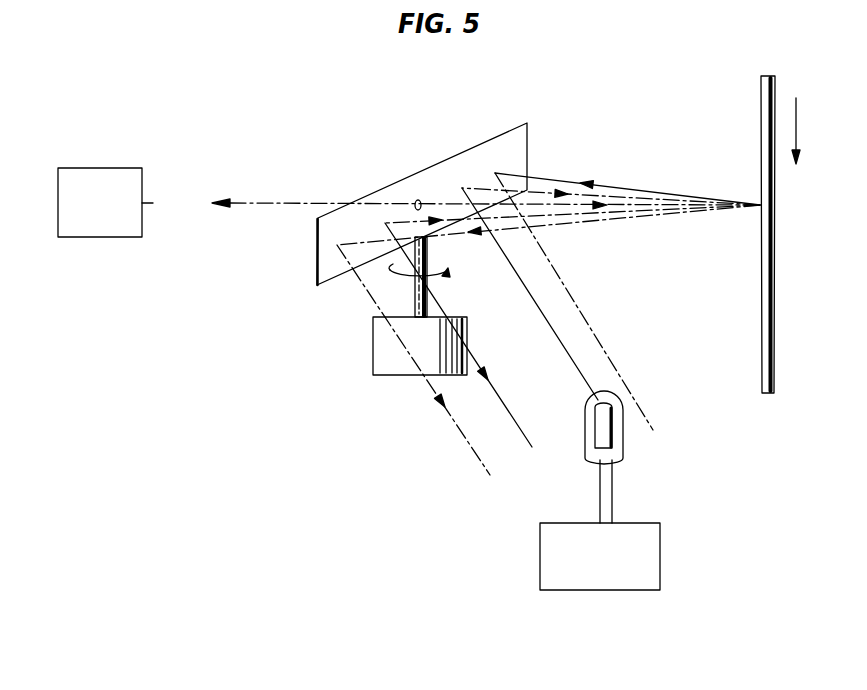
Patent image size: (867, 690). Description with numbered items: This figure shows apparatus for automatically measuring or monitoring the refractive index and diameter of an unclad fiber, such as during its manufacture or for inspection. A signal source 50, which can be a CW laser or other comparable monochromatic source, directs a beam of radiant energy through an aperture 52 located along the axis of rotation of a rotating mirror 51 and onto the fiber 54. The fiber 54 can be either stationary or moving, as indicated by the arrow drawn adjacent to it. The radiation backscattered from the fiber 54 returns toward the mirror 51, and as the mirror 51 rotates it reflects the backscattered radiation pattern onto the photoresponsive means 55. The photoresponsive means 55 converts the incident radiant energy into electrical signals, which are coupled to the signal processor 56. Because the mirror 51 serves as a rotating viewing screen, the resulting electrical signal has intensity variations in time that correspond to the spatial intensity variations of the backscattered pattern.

The signal source 50 is at (113, 168).
The rotating mirror 51 is at (468, 167).
The aperture 52 is at (412, 204).
The fiber 54 is at (765, 108).
The photoresponsive means 55 is at (623, 428).
The signal processor 56 is at (657, 543).